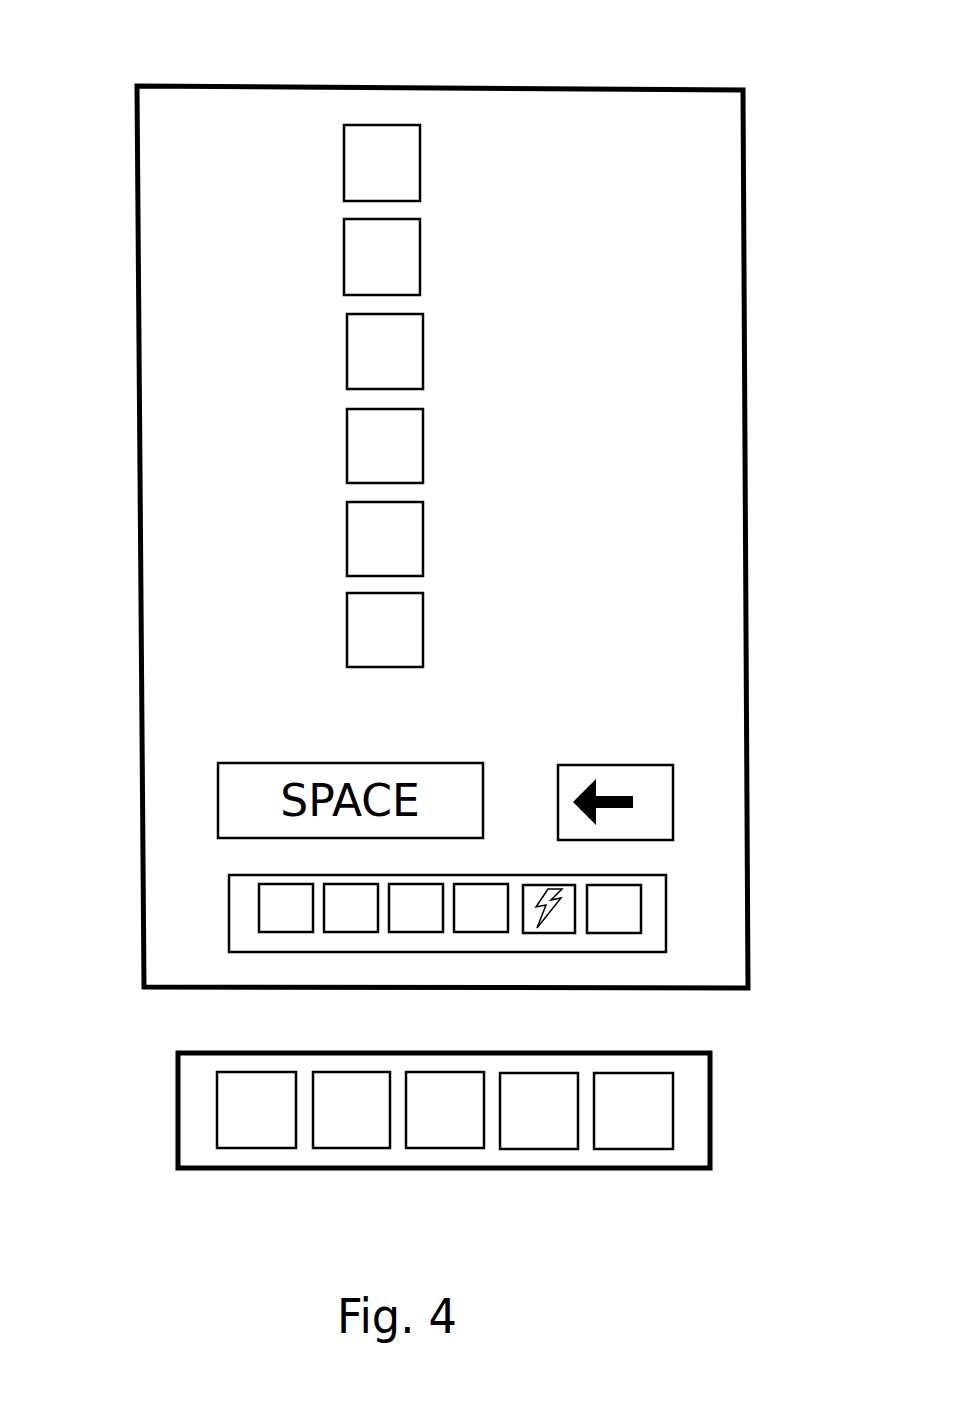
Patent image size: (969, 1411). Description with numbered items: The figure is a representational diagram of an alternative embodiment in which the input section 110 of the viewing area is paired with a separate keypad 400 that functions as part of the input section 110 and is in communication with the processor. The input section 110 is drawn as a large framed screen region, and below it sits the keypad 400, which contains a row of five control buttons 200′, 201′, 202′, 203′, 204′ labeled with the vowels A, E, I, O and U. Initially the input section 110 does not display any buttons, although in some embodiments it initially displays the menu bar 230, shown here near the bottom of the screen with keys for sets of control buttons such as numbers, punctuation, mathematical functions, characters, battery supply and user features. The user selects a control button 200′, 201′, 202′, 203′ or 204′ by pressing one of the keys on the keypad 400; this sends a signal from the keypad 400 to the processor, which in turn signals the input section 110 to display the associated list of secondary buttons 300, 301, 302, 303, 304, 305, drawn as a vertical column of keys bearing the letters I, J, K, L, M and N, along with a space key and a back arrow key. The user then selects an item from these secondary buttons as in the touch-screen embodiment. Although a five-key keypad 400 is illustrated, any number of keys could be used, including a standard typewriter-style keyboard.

The input section 110 is at (541, 60).
The secondary button 300 is at (440, 154).
The secondary button 301 is at (440, 249).
The secondary button 302 is at (443, 334).
The secondary button 303 is at (443, 436).
The secondary button 304 is at (443, 530).
The secondary button 305 is at (443, 623).
The menu bar 230 is at (210, 884).
The keypad 400 is at (165, 1079).
The control button 200′ is at (245, 1180).
The control button 201′ is at (340, 1180).
The control button 202′ is at (434, 1180).
The control button 203′ is at (528, 1182).
The control button 204′ is at (622, 1182).